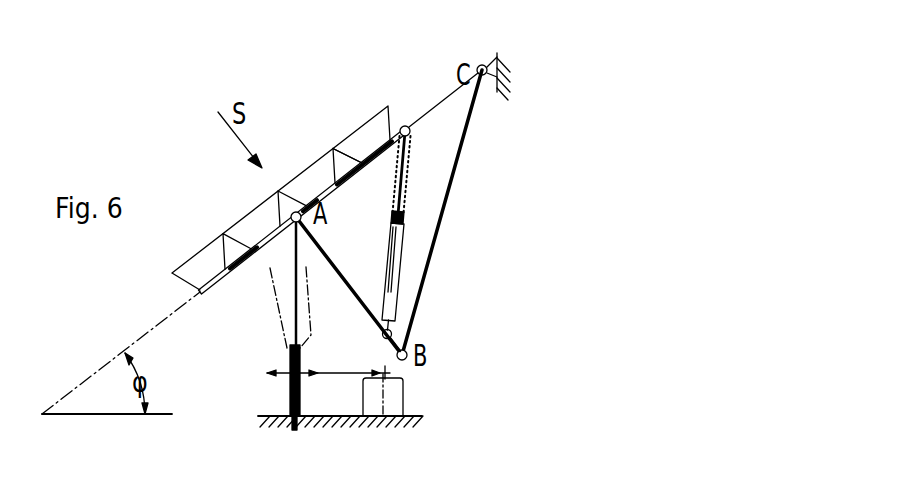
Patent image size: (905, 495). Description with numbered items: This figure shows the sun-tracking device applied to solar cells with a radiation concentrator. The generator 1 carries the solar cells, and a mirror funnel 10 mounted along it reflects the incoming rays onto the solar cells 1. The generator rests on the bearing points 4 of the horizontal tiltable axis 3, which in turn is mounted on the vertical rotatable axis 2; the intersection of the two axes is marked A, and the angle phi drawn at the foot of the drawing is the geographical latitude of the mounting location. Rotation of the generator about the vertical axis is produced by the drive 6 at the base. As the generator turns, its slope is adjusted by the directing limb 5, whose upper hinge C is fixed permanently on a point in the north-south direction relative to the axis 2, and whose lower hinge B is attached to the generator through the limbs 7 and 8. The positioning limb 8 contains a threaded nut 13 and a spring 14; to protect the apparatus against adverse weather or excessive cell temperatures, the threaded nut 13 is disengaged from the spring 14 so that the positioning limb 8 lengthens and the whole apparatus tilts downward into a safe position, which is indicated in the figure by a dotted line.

The generator 1 is at (375, 153).
The vertical rotatable axis 2 is at (293, 292).
The horizontal tiltable axis 3 is at (389, 207).
The bearing points 4 is at (303, 212).
The directing limb 5 is at (418, 302).
The drive 6 is at (395, 392).
The limb 7 is at (372, 322).
The positioning limb 8 is at (393, 287).
The mirror funnel 10 is at (355, 160).
The threaded nut 13 is at (403, 218).
The spring 14 is at (409, 163).